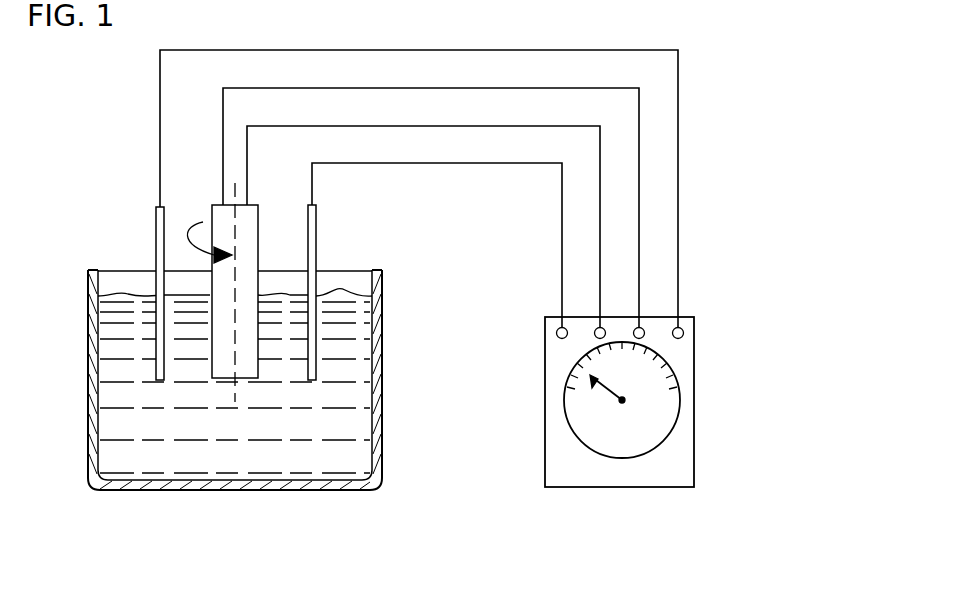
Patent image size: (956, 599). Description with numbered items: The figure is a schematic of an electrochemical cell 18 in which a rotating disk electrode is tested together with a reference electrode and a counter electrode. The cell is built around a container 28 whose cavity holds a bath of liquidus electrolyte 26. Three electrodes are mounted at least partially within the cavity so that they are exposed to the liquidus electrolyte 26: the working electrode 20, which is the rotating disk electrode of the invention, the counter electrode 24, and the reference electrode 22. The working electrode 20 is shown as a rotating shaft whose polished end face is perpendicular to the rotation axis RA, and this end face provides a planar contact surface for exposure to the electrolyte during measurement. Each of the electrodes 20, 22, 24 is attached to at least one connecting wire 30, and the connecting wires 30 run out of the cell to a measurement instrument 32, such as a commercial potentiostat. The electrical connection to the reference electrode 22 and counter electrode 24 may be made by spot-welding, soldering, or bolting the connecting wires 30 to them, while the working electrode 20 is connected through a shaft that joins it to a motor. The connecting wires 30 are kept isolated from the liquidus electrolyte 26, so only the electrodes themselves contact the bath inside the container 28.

The electrochemical cell 18 is at (372, 297).
The working electrode 20 is at (245, 275).
The reference electrode 22 is at (155, 238).
The counter electrode 24 is at (315, 228).
The liquidus electrolyte 26 is at (258, 462).
The container 28 is at (92, 270).
The connecting wire 30 is at (562, 274).
The measurement instrument 32 is at (694, 340).
The rotation axis RA is at (233, 395).